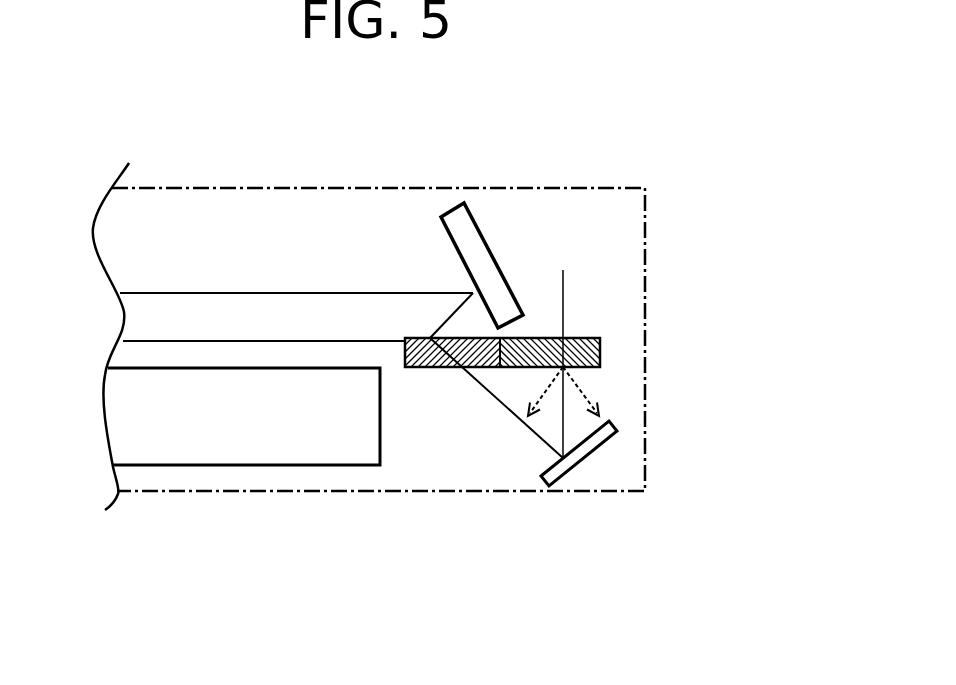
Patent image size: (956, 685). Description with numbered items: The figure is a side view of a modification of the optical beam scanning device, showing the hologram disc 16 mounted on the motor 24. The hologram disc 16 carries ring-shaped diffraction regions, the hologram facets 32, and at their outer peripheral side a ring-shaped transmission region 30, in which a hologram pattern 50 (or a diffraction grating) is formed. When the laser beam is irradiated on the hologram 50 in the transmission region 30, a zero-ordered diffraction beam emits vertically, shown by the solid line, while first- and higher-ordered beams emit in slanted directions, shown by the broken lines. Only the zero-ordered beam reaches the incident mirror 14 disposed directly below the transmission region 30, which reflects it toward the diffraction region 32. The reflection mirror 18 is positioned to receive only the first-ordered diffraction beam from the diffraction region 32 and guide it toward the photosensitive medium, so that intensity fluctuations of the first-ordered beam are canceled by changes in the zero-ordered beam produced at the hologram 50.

The incident mirror 14 is at (590, 445).
The hologram disc 16 is at (247, 350).
The reflection mirror 18 is at (482, 253).
The motor 24 is at (238, 438).
The transmission region 30 is at (584, 332).
The hologram facets 32 is at (423, 367).
The hologram pattern 50 is at (601, 358).